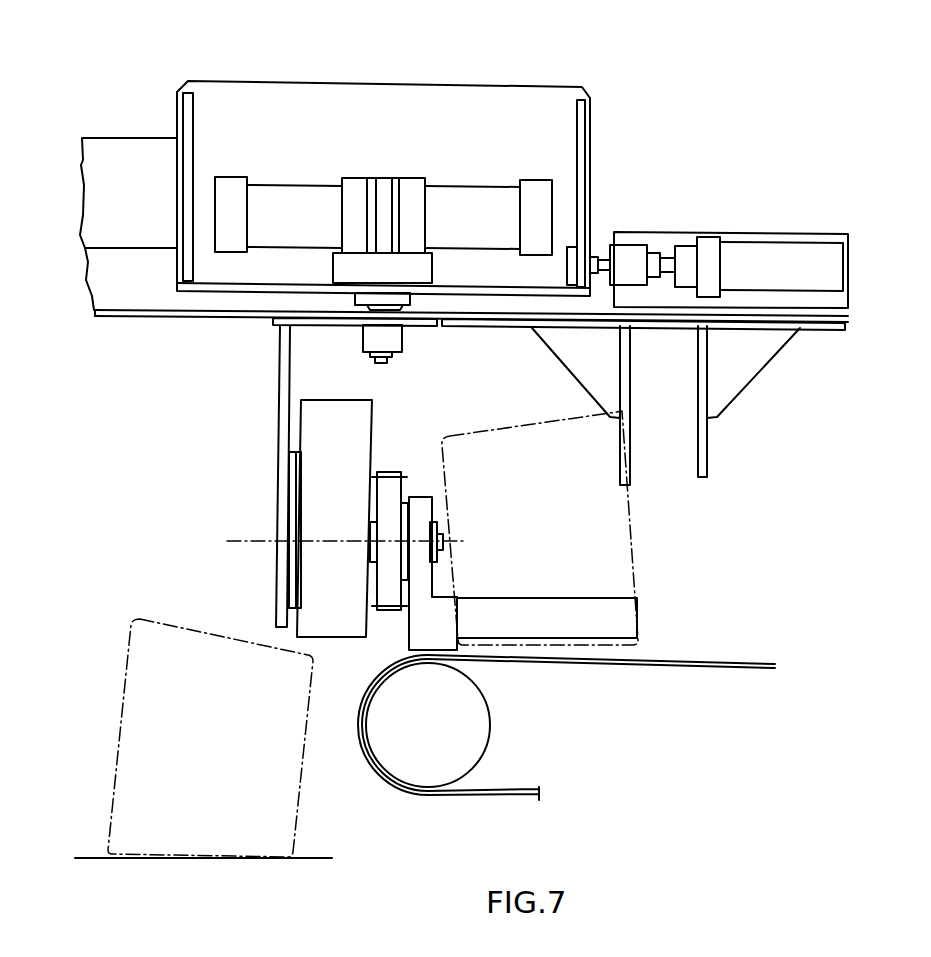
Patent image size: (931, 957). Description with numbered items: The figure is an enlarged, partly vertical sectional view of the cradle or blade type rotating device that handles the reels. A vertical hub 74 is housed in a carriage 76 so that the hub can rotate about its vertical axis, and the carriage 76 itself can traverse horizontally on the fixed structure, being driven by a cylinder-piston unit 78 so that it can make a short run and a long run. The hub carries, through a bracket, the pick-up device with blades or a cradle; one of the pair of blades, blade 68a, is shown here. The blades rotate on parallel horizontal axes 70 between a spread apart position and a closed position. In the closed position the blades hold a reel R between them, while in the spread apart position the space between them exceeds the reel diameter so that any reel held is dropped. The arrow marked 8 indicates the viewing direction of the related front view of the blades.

The carriage 76 is at (542, 102).
The cylinder-piston unit 78 is at (750, 260).
The vertical hub 74 is at (390, 298).
The parallel horizontal axes 70 is at (242, 537).
The blade 68a is at (610, 621).
The reel R is at (552, 435).
The view direction arrow for FIG. 8 is at (728, 527).